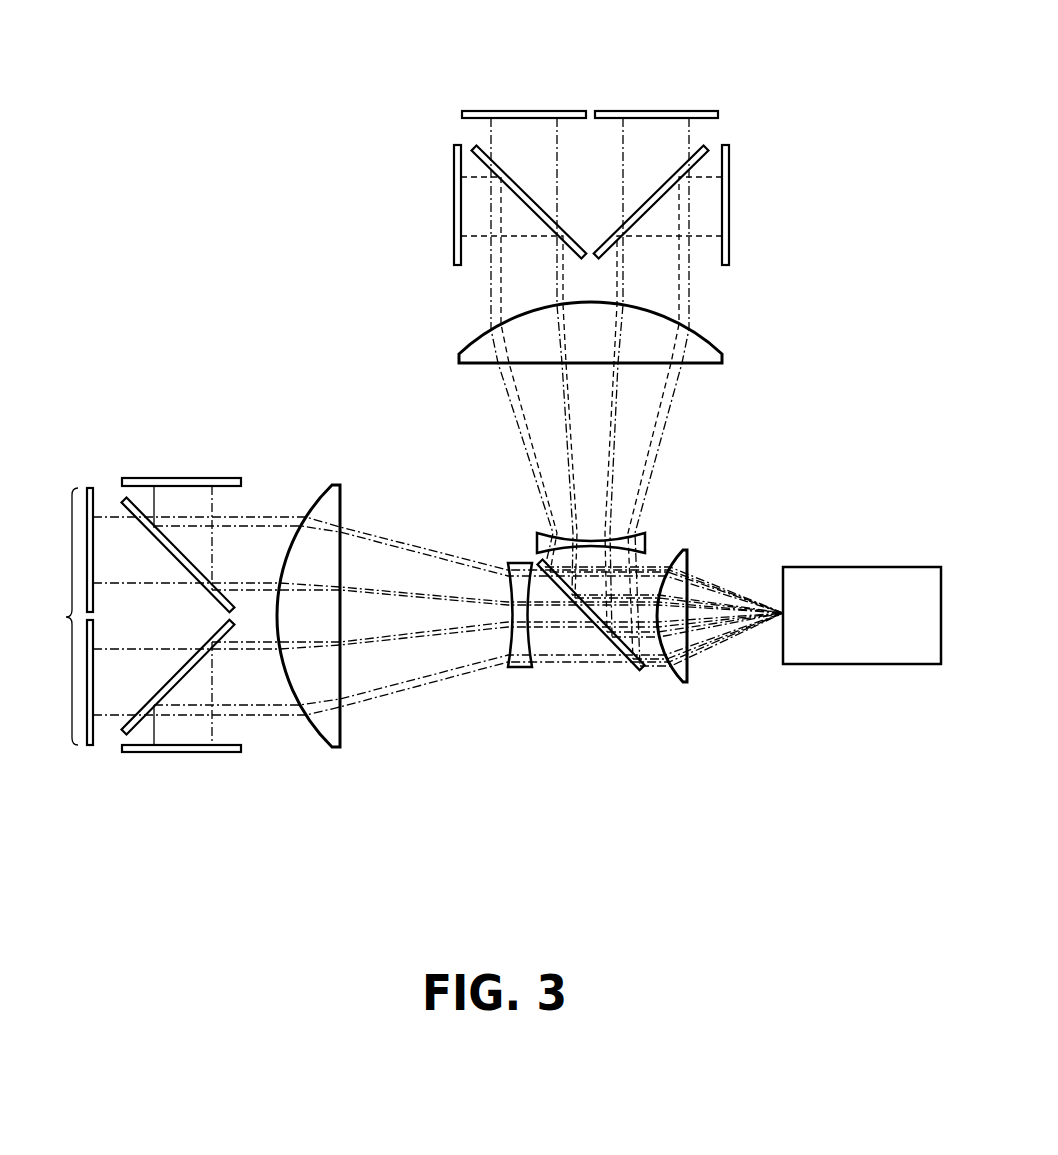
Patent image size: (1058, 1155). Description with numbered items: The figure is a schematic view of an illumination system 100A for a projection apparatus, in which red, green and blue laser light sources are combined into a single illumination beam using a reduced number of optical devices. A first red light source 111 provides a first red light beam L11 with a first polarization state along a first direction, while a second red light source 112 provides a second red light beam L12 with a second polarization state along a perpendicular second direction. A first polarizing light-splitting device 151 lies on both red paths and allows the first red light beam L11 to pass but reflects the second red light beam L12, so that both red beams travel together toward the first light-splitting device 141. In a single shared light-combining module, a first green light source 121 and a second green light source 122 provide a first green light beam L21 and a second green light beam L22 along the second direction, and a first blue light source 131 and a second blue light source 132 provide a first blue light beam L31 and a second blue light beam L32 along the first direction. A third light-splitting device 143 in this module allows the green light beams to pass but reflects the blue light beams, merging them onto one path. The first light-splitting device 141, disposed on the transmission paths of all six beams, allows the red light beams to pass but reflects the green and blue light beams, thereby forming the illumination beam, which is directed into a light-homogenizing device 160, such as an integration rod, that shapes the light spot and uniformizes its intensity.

The illumination system 100A is at (932, 899).
The first red light source 111 is at (61, 616).
The second red light source 112 is at (182, 478).
The first green light source 121 is at (524, 111).
The second green light source 122 is at (657, 111).
The first blue light source 131 is at (454, 203).
The second blue light source 132 is at (729, 203).
The first light-splitting device 141 is at (635, 668).
The third light-splitting device 143 is at (475, 148).
The first polarizing light-splitting device 151 is at (132, 503).
The light-homogenizing device 160 is at (855, 575).
The first red light beam L11 is at (110, 515).
The second red light beam L12 is at (213, 500).
The first green light beam L21 is at (491, 128).
The second green light beam L22 is at (689, 128).
The first blue light beam L31 is at (478, 237).
The second blue light beam L32 is at (702, 237).